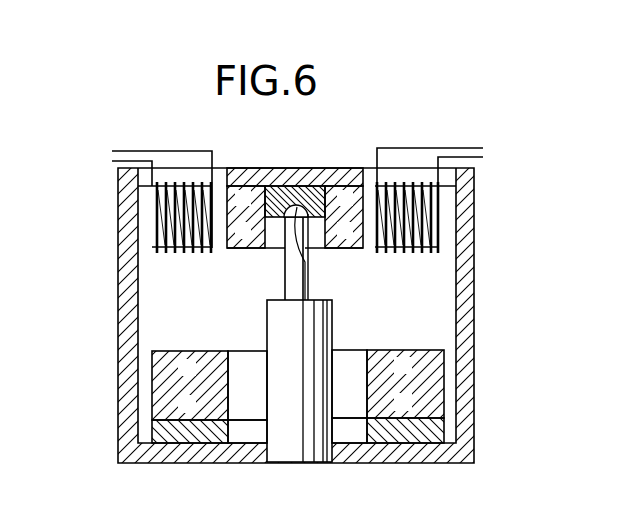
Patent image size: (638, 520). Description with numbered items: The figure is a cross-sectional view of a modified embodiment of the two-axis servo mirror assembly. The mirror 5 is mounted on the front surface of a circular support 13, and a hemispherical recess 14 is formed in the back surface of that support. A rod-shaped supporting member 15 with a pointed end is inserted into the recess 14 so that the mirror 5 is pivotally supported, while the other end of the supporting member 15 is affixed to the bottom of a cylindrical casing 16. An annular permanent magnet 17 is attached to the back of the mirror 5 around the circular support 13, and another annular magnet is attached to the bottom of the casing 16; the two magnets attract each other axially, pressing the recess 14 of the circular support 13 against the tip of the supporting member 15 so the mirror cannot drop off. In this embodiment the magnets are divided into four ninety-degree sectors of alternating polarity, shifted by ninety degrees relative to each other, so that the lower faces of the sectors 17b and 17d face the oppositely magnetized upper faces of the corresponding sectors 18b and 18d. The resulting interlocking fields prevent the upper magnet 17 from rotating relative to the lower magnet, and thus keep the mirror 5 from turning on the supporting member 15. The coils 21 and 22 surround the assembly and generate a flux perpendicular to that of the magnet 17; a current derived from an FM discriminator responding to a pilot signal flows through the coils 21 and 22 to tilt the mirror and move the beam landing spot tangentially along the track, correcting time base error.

The two-axis servo mirror 5 is at (270, 184).
The circular support 13 is at (309, 186).
The hemispherical recess 14 is at (307, 255).
The supporting member 15 is at (290, 268).
The cylindrical casing 16 is at (465, 284).
The annular permanent magnet 17 is at (233, 250).
The magnetized sector 17b is at (244, 186).
The magnetized sector 17d is at (365, 250).
The magnetized sector 18b is at (170, 385).
The magnetized sector 18d is at (425, 388).
The coil 21 is at (178, 196).
The coil 22 is at (395, 200).